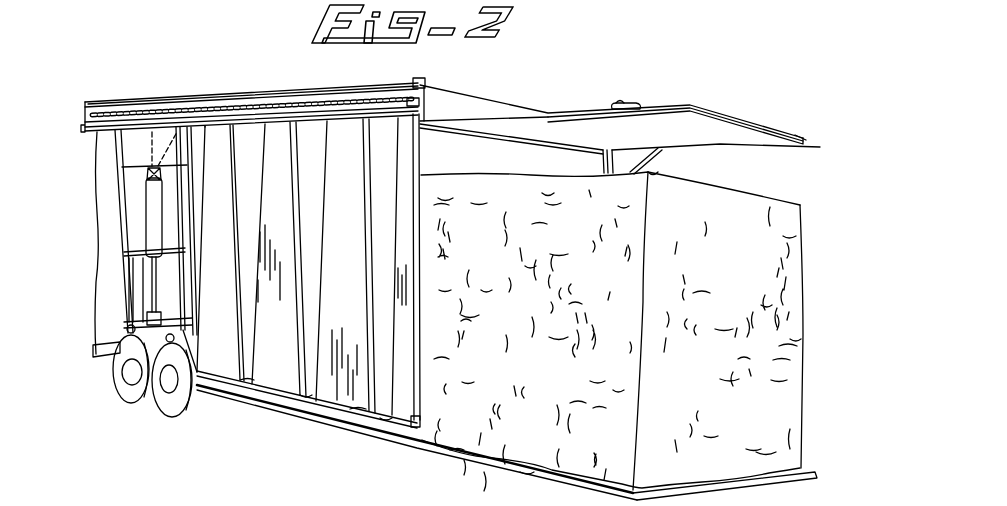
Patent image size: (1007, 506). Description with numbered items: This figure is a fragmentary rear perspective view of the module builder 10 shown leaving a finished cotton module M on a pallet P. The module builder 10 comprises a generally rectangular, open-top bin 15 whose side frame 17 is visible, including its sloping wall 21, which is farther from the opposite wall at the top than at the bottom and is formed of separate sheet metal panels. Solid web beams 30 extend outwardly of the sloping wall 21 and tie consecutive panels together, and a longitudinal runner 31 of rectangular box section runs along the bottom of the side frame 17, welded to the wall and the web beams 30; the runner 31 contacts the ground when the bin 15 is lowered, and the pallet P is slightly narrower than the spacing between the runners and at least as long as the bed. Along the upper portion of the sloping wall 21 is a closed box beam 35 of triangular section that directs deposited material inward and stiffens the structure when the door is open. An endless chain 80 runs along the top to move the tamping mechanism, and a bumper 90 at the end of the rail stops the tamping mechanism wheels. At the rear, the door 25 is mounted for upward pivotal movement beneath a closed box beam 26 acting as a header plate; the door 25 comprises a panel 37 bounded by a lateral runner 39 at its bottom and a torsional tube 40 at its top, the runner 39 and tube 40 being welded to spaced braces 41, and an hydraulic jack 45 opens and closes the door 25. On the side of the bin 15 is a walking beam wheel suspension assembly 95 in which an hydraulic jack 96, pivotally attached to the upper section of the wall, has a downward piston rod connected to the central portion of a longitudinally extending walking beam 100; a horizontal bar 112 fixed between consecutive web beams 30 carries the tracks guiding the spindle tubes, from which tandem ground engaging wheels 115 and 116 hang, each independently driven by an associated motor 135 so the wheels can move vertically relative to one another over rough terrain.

The module builder 10 is at (192, 56).
The bin 15 is at (140, 101).
The endless chain 80 is at (218, 110).
The closed box beam 35 is at (283, 94).
The bumper 90 is at (422, 81).
The closed box beam 26 is at (475, 100).
The braces 41 is at (567, 114).
The door 25 is at (790, 131).
The torsional tube 40 is at (538, 143).
The hydraulic jack 45 is at (650, 157).
The panel 37 is at (717, 135).
The lateral runner 39 is at (808, 144).
The hydraulic jack 96 is at (147, 195).
The horizontal bar 112 is at (128, 252).
The walking beam wheel suspension assembly 95 is at (134, 277).
The walking beam 100 is at (148, 318).
The motor 135 is at (168, 337).
The ground engaging wheel 116 is at (125, 392).
The ground engaging wheel 115 is at (180, 416).
The side frame 17 is at (276, 360).
The longitudinal runner 31 is at (342, 408).
The web beam 30 is at (252, 223).
The sloping wall 21 is at (351, 311).
The module M is at (586, 250).
The pallet P is at (566, 477).